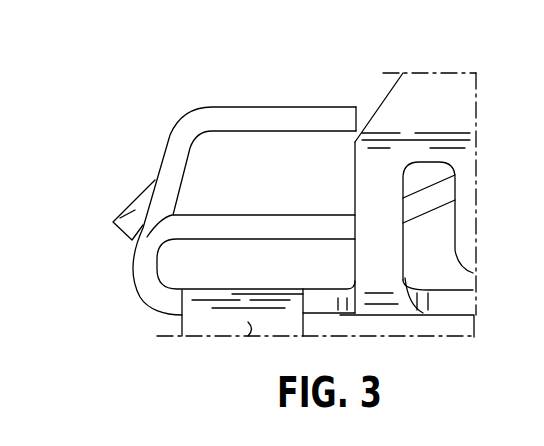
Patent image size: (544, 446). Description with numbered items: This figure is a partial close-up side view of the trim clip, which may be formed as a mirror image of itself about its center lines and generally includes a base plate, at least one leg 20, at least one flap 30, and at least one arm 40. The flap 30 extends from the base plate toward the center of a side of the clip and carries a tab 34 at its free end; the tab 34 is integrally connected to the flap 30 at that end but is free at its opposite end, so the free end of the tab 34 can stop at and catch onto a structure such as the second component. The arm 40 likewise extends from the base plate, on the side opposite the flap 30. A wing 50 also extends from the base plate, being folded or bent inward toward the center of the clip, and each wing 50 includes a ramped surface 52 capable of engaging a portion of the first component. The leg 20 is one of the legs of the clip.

The leg 20 is at (255, 331).
The flap 30 is at (247, 118).
The tab 34 is at (125, 213).
The arm 40 is at (433, 105).
The wing 50 is at (233, 223).
The ramped surface 52 is at (440, 194).